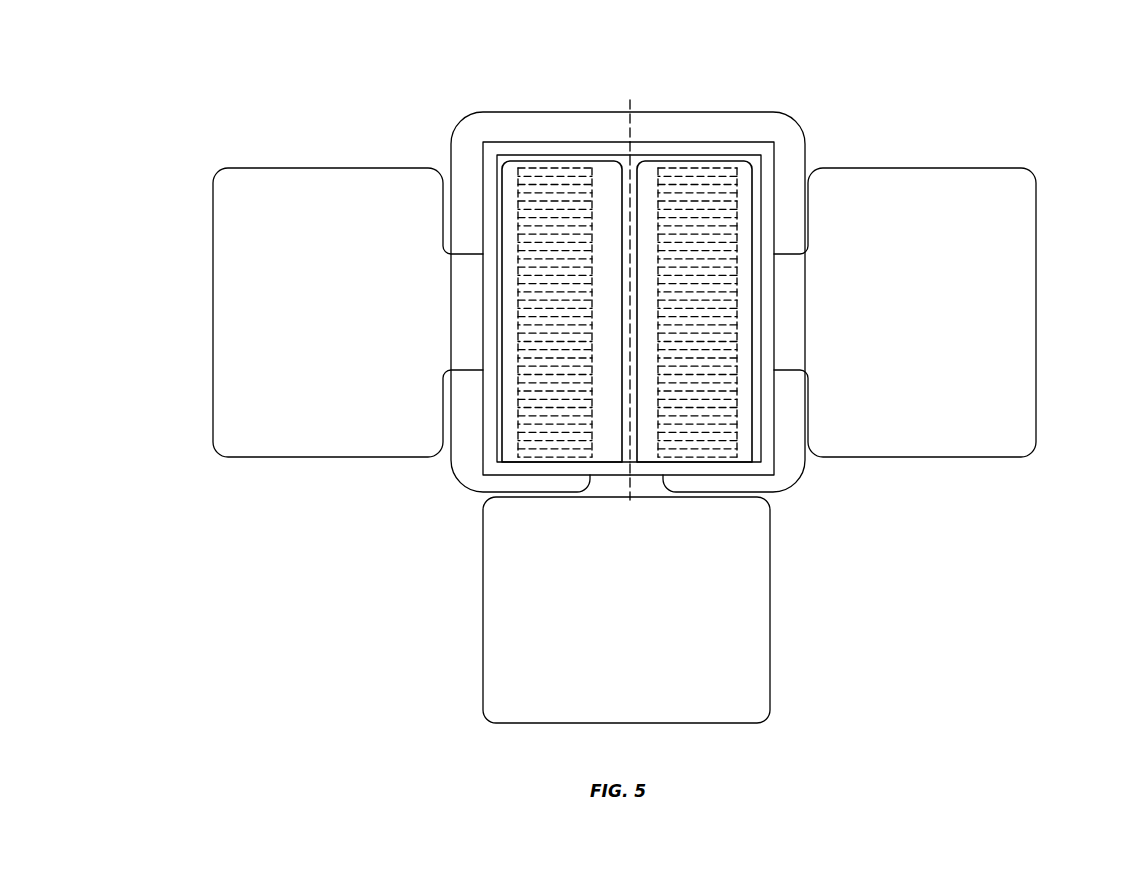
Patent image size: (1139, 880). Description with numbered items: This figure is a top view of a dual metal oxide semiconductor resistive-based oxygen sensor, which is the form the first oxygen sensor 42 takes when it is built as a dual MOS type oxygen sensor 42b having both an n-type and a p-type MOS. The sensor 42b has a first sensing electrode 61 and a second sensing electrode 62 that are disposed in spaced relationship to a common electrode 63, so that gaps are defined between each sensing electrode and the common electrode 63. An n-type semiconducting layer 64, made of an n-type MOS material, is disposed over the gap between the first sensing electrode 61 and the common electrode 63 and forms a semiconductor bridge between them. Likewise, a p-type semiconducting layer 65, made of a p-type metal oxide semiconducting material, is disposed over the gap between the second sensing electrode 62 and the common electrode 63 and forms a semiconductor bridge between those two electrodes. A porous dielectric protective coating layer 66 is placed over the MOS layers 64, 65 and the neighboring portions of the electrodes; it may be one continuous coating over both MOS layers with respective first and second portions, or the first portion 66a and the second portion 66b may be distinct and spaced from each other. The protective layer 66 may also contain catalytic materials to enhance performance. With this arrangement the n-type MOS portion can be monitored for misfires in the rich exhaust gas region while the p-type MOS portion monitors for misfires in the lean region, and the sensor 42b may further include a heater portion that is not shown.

The first oxygen sensor 42 is at (218, 49).
The dual MOS type oxygen sensor 42b is at (274, 68).
The first sensing electrode 61 is at (213, 295).
The second sensing electrode 62 is at (1036, 260).
The common electrode 63 is at (482, 650).
The n-type semiconducting layer 64 is at (603, 178).
The p-type semiconducting layer 65 is at (648, 183).
The porous dielectric protective coating layer 66 is at (473, 127).
The first portion 66a is at (538, 125).
The second portion 66b is at (730, 127).